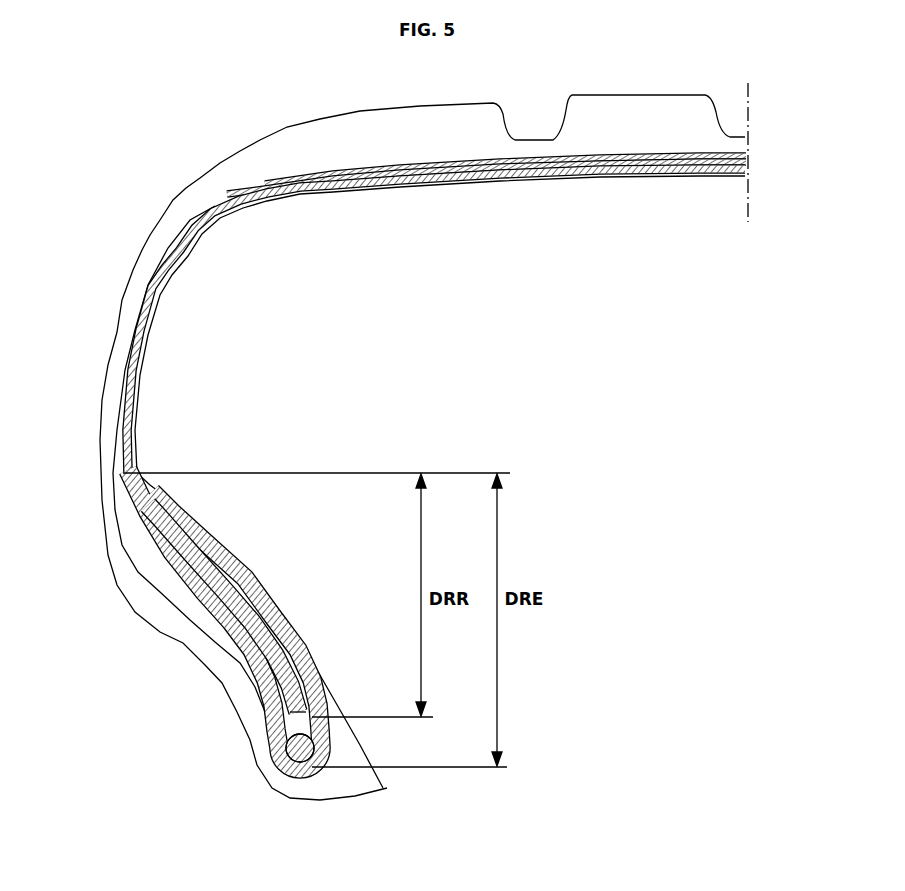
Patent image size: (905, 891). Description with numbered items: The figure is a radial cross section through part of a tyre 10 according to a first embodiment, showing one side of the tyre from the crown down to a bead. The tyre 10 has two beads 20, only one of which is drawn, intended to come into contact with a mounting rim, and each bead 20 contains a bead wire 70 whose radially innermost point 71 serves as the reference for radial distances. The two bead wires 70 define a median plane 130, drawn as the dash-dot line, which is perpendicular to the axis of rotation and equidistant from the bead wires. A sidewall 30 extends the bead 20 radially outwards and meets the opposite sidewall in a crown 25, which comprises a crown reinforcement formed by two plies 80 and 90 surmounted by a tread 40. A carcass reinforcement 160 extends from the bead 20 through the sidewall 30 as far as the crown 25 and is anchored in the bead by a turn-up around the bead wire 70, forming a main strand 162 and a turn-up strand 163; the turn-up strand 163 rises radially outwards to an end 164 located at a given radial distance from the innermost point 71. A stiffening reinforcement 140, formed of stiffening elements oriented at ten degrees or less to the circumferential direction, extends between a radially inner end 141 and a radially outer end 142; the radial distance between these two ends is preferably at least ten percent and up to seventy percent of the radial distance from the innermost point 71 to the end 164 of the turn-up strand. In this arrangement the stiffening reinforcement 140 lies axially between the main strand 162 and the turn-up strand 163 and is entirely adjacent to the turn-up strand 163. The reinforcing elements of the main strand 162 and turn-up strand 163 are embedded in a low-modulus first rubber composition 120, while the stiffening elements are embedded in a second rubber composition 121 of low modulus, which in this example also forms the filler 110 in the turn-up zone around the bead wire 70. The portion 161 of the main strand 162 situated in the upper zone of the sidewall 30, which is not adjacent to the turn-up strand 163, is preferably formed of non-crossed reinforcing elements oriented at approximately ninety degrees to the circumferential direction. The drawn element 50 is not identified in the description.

The tyre 10 is at (166, 160).
The bead 20 is at (258, 718).
The crown 25 is at (760, 97).
The sidewall 30 is at (122, 332).
The tread 40 is at (365, 138).
The carcass ply 50 is at (153, 333).
The bead wire 70 is at (312, 750).
The radially innermost point 71 is at (303, 770).
The ply 80 is at (363, 178).
The ply 90 is at (418, 170).
The filler 110 is at (288, 772).
The first rubber composition 120 is at (183, 643).
The second rubber composition 121 is at (240, 665).
The median plane 130 is at (750, 222).
The stiffening reinforcement 140 is at (203, 590).
The radially inner end 141 is at (300, 700).
The radially outer end 142 is at (123, 500).
The carcass reinforcement 160 is at (128, 458).
The portion of the main strand 161 is at (159, 287).
The main strand 162 is at (247, 622).
The turn-up strand 163 is at (218, 628).
The end 164 is at (121, 478).